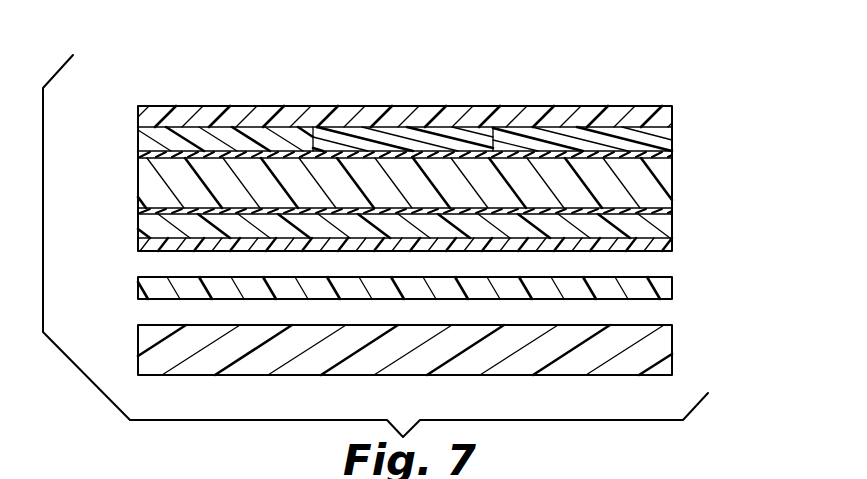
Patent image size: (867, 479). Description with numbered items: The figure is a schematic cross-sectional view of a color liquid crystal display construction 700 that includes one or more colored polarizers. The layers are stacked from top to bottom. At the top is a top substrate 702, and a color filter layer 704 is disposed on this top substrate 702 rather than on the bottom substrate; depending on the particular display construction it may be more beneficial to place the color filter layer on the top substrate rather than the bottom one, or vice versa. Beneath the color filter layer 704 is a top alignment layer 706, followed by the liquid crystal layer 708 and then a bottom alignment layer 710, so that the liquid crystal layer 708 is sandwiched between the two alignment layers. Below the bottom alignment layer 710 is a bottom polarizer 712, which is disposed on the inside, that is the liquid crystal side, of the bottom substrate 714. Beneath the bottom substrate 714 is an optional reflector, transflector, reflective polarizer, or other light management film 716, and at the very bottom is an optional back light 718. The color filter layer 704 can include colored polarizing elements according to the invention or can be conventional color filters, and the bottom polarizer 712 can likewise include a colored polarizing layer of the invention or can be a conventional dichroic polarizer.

The color liquid crystal display construction 700 is at (632, 62).
The top substrate 702 is at (530, 117).
The color filter layer 704 is at (665, 138).
The top alignment layer 706 is at (668, 155).
The liquid crystal layer 708 is at (138, 168).
The bottom alignment layer 710 is at (140, 210).
The bottom polarizer 712 is at (668, 218).
The bottom substrate 714 is at (670, 247).
The light management film 716 is at (153, 290).
The back light 718 is at (220, 367).